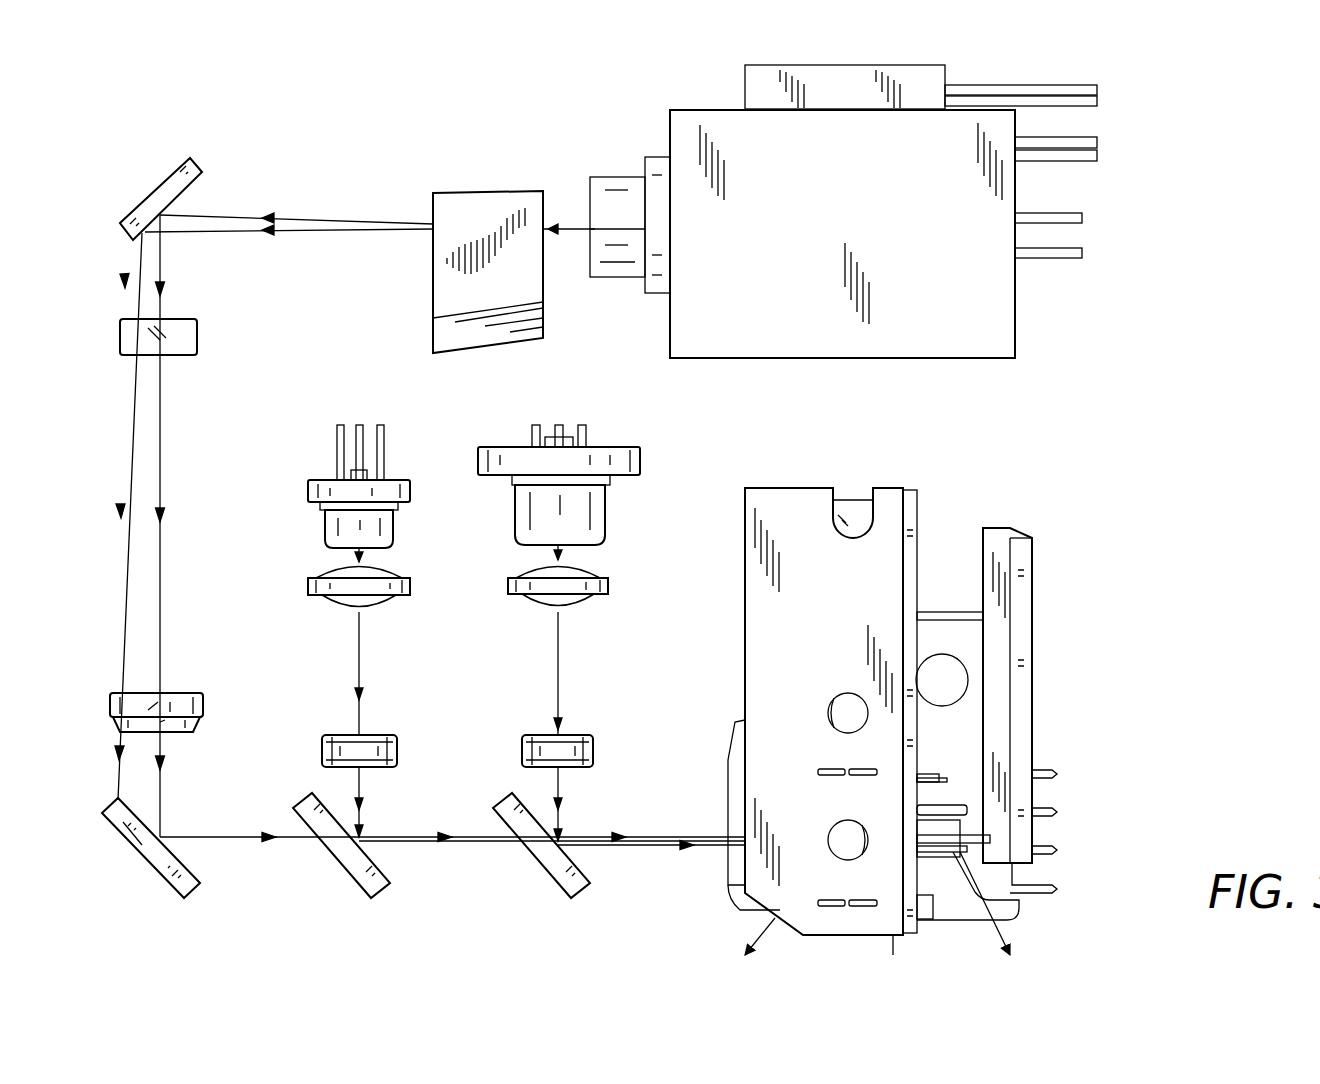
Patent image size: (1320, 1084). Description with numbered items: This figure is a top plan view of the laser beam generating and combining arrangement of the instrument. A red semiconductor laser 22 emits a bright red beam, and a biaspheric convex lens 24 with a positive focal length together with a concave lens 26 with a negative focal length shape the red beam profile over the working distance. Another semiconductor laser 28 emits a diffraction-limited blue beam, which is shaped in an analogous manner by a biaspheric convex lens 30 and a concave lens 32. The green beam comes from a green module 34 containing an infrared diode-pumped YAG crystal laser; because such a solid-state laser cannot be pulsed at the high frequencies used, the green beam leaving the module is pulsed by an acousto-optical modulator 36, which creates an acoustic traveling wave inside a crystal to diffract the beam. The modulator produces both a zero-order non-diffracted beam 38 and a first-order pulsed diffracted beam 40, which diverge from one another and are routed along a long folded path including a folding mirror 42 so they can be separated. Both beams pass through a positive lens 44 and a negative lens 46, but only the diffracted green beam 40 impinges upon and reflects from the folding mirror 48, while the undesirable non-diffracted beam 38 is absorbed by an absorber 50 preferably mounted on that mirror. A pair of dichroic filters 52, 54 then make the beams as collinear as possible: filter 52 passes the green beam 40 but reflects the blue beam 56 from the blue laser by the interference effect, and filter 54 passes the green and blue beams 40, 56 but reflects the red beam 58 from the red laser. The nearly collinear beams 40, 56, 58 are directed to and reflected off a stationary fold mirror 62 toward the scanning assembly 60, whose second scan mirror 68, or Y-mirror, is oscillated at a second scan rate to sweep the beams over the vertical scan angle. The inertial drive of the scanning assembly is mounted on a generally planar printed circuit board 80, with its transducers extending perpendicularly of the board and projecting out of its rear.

The semiconductor laser 22 is at (600, 520).
The biaspheric convex lens 24 is at (608, 587).
The concave lens 26 is at (593, 748).
The semiconductor laser 28 is at (395, 527).
The biaspheric convex lens 30 is at (408, 590).
The concave lens 32 is at (397, 748).
The green module 34 is at (727, 360).
The acousto-optical modulator 36 is at (475, 355).
The zero-order non-diffracted beam 38 is at (205, 236).
The first-order pulsed diffracted beam 40 is at (226, 213).
The folding mirror 42 is at (163, 160).
The positive lens 44 is at (197, 340).
The negative lens 46 is at (203, 705).
The folding mirror 48 is at (198, 887).
The absorber 50 is at (113, 820).
The dichroic filter 52 is at (390, 875).
The dichroic filter 54 is at (590, 875).
The blue beam 56 is at (360, 785).
The red beam 58 is at (560, 785).
The scanning assembly 60 is at (962, 515).
The stationary fold mirror 62 is at (1025, 595).
The second scan mirror 68 is at (950, 852).
The printed circuit board 80 is at (780, 500).